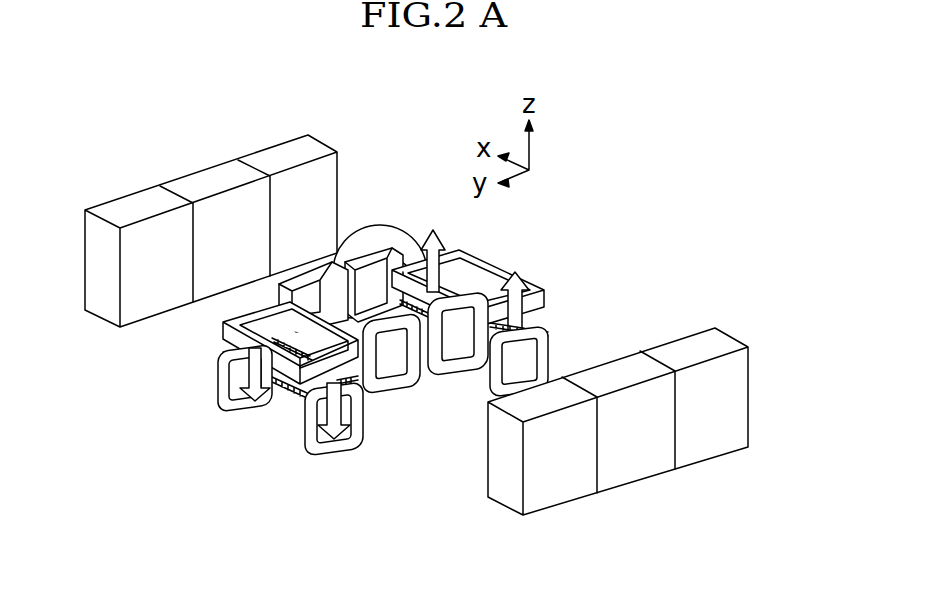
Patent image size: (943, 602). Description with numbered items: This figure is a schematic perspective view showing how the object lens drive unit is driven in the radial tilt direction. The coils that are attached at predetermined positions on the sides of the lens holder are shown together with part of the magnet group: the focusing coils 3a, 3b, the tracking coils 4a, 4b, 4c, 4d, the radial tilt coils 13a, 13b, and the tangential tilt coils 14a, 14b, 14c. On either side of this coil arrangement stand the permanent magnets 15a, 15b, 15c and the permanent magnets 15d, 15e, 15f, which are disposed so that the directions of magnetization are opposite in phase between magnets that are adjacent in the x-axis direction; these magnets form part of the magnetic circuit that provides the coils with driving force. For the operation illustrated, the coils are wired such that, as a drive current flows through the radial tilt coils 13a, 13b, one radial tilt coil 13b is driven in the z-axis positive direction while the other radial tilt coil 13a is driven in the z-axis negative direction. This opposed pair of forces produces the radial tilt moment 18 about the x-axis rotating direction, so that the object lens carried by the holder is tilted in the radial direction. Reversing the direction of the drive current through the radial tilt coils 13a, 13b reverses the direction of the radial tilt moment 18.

The focusing coil 3a is at (232, 335).
The focusing coil 3b is at (472, 273).
The tracking coil 4a is at (397, 382).
The tracking coil 4b is at (447, 367).
The tracking coil 4c is at (308, 277).
The tracking coil 4d is at (370, 256).
The radial tilt coil 13a is at (292, 390).
The radial tilt coil 13b is at (545, 330).
The tangential tilt coil 14a is at (325, 443).
The tangential tilt coil 14b is at (545, 357).
The tangential tilt coil 14c is at (227, 390).
The permanent magnet 15a is at (558, 467).
The permanent magnet 15b is at (628, 450).
The permanent magnet 15c is at (707, 430).
The permanent magnet 15d is at (133, 208).
The permanent magnet 15e is at (212, 188).
The permanent magnet 15f is at (287, 162).
The radial tilt moment 18 is at (347, 258).